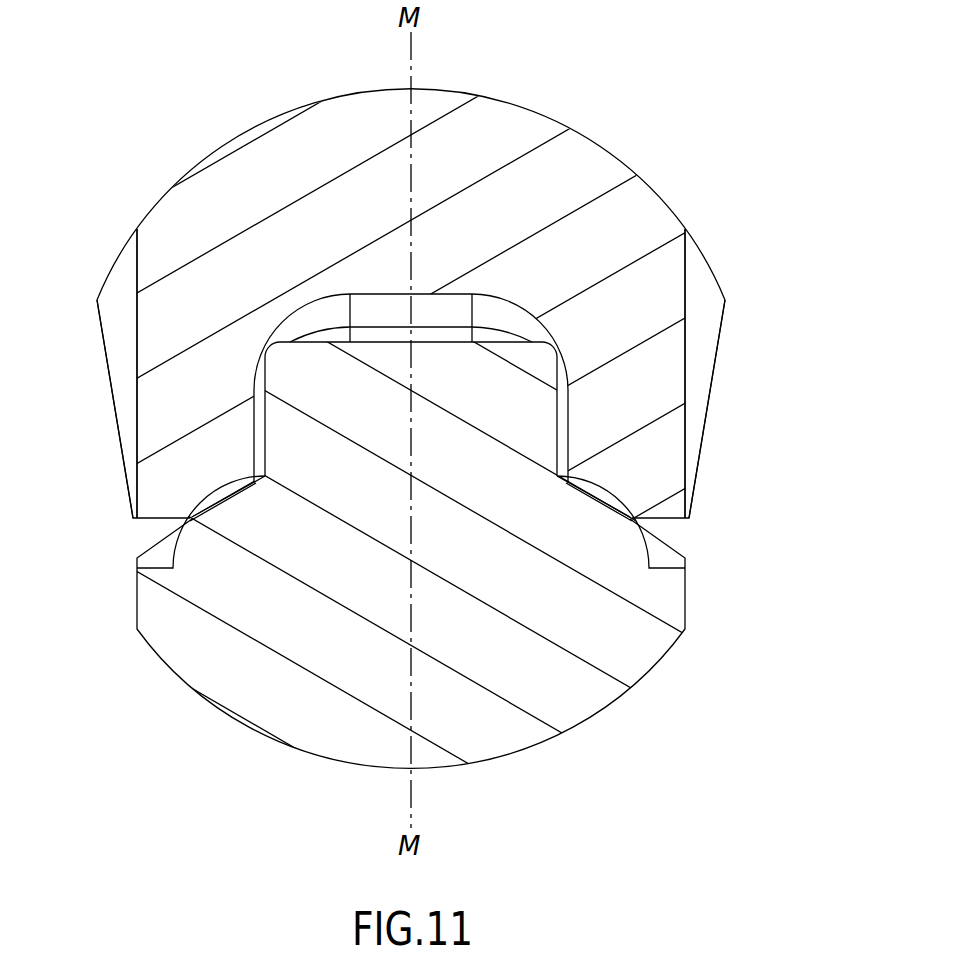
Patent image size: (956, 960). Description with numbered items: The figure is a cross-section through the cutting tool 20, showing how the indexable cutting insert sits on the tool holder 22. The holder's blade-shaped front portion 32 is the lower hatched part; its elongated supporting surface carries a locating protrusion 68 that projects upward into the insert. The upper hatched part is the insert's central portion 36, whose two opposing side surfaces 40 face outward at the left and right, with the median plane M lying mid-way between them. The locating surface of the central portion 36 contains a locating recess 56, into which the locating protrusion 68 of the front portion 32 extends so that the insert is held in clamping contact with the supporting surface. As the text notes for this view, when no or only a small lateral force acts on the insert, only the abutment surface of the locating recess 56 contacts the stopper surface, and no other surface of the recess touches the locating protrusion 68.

The cutting tool 20 is at (212, 174).
The tool holder 22 is at (560, 680).
The front portion 32 is at (349, 416).
The central portion 36 is at (612, 218).
The side surfaces 40 is at (137, 335).
The locating recess 56 is at (444, 292).
The locating protrusion 68 is at (296, 642).